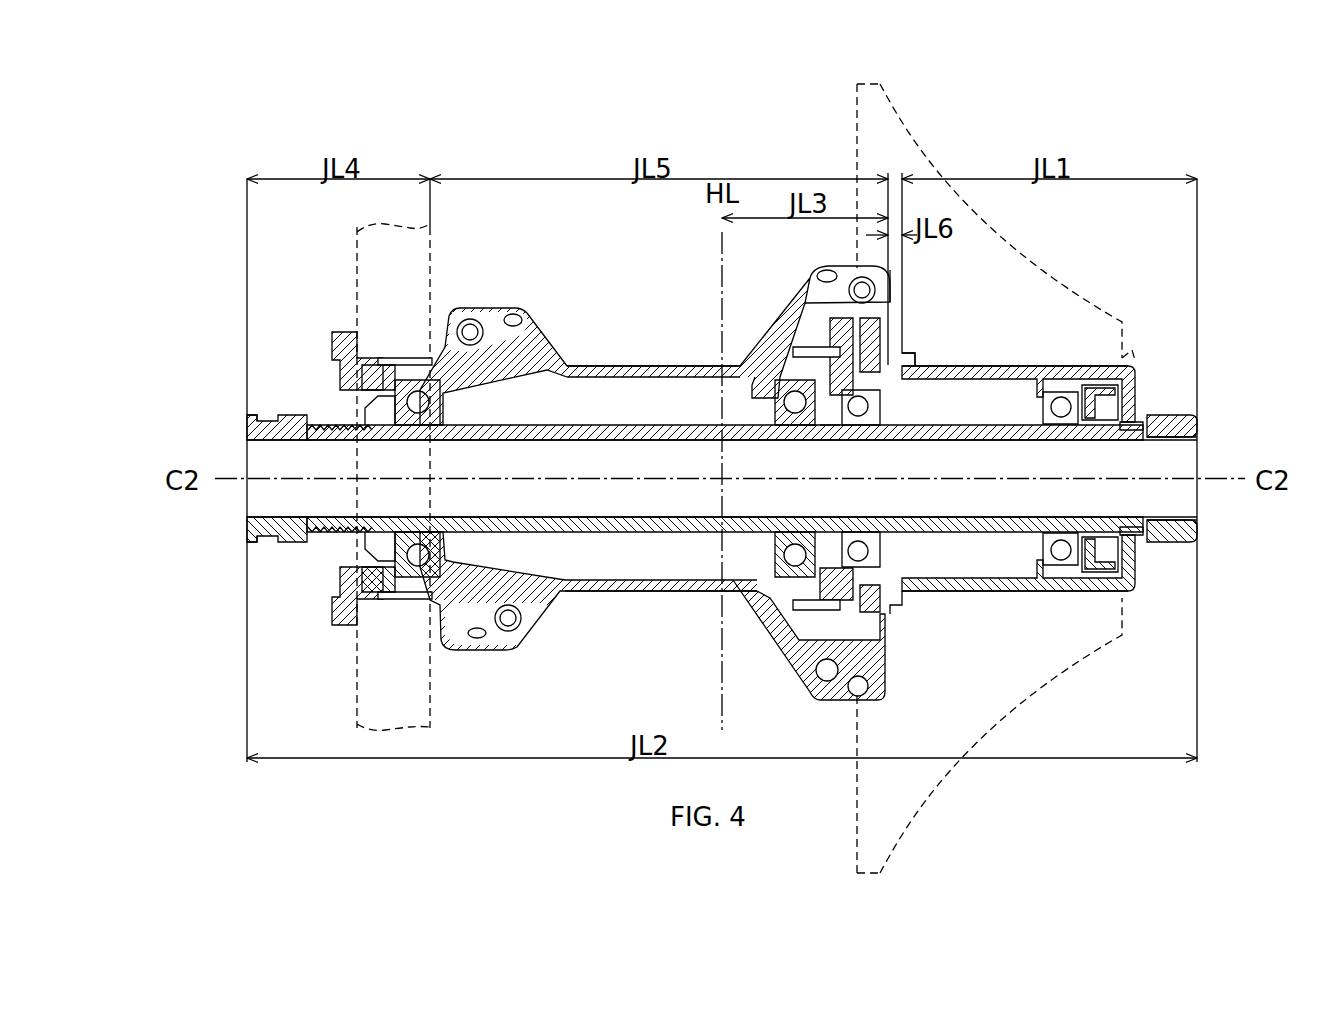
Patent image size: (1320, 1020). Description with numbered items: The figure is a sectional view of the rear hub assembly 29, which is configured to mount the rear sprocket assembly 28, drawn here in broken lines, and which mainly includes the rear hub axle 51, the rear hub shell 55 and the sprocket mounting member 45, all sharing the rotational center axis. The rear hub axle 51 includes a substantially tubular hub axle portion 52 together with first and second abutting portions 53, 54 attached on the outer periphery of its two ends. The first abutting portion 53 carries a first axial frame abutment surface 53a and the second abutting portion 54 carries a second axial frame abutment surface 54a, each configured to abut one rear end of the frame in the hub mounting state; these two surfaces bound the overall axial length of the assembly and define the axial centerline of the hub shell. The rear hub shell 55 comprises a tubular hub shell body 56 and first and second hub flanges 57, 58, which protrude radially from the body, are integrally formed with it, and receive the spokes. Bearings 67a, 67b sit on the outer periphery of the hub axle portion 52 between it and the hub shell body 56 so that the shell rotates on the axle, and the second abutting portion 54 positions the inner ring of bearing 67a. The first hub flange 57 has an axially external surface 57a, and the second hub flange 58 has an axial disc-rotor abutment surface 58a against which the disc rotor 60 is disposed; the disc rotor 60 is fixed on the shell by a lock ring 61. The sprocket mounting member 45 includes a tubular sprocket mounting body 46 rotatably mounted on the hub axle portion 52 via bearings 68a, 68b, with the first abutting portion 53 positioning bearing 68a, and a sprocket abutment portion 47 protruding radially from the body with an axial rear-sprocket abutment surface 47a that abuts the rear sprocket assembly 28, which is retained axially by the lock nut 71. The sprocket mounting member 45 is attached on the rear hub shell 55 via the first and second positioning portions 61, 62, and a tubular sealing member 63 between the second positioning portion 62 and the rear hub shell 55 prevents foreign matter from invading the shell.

The rear hub assembly 29 is at (266, 165).
The rear sprocket assembly 28 is at (927, 140).
The disc rotor 60 is at (390, 253).
The second hub flange 58 is at (479, 318).
The axial disc-rotor abutment surface 58a is at (424, 355).
The lock ring 61 is at (340, 358).
The second axial frame abutment surface 54a is at (250, 418).
The second abutting portion 54 is at (265, 441).
The bearing 67a is at (413, 433).
The rear hub shell 55 is at (627, 335).
The hub shell body 56 is at (664, 366).
The first hub flange 57 is at (811, 290).
The axially external surface 57a is at (890, 290).
The sprocket abutment portion 47 is at (893, 334).
The axial rear-sprocket abutment surface 47a is at (904, 357).
The sprocket mounting member 45 is at (1011, 341).
The sprocket mounting body 46 is at (1048, 365).
The lock nut 71 is at (1134, 352).
The rear hub axle 51 is at (1211, 413).
The first axial frame abutment surface 53a is at (1198, 425).
The first abutting portion 53 is at (1163, 428).
The bearing 67b is at (797, 430).
The hub axle portion 52 is at (828, 440).
The bearing 68b is at (884, 413).
The bearing 68a is at (1061, 428).
The sealing member 63 is at (797, 600).
The second positioning portion 62 is at (817, 625).